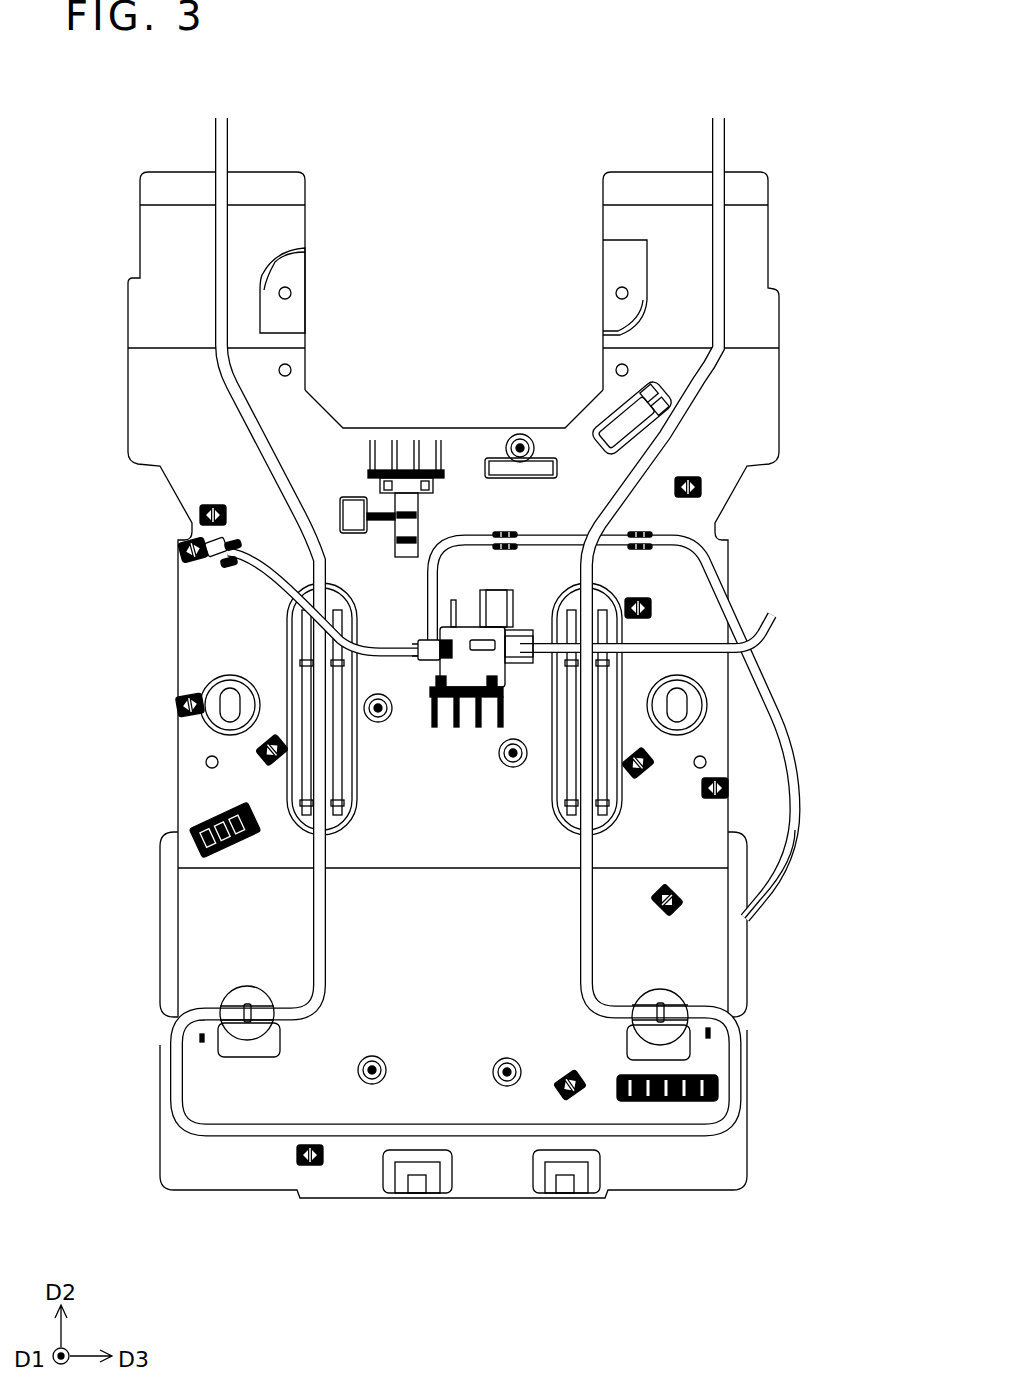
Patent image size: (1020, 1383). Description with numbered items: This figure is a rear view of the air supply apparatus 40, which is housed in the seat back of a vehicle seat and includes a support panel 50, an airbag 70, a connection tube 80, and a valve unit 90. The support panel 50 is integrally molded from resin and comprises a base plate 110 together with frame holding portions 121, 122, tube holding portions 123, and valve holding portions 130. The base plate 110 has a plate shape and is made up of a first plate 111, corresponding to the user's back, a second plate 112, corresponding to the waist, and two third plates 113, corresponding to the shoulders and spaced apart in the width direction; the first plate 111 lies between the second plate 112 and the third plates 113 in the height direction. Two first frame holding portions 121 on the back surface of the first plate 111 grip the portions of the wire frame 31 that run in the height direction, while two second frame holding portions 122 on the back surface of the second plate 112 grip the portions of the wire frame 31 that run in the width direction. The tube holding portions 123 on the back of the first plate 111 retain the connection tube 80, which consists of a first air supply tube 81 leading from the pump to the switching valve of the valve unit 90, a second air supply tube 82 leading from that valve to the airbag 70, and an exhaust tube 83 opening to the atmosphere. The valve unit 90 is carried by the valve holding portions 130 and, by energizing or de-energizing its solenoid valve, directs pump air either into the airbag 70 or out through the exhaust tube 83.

The air supply apparatus 40 is at (111, 118).
The wire frame 31 is at (228, 148).
The support panel 50 is at (778, 178).
The base plate 110 is at (450, 710).
The first plate 111 is at (178, 660).
The second plate 112 is at (650, 1192).
The third plate 113 is at (120, 320).
The airbag 70 is at (748, 975).
The connection tube 80 is at (783, 716).
The first air supply tube 81 is at (765, 640).
The second air supply tube 82 is at (782, 885).
The exhaust tube 83 is at (345, 625).
The valve unit 90 is at (490, 592).
The first frame holding portion 121 is at (358, 800).
The second frame holding portion 122 is at (262, 1040).
The tube holding portion 123 is at (505, 535).
The valve holding portion 130 is at (430, 720).